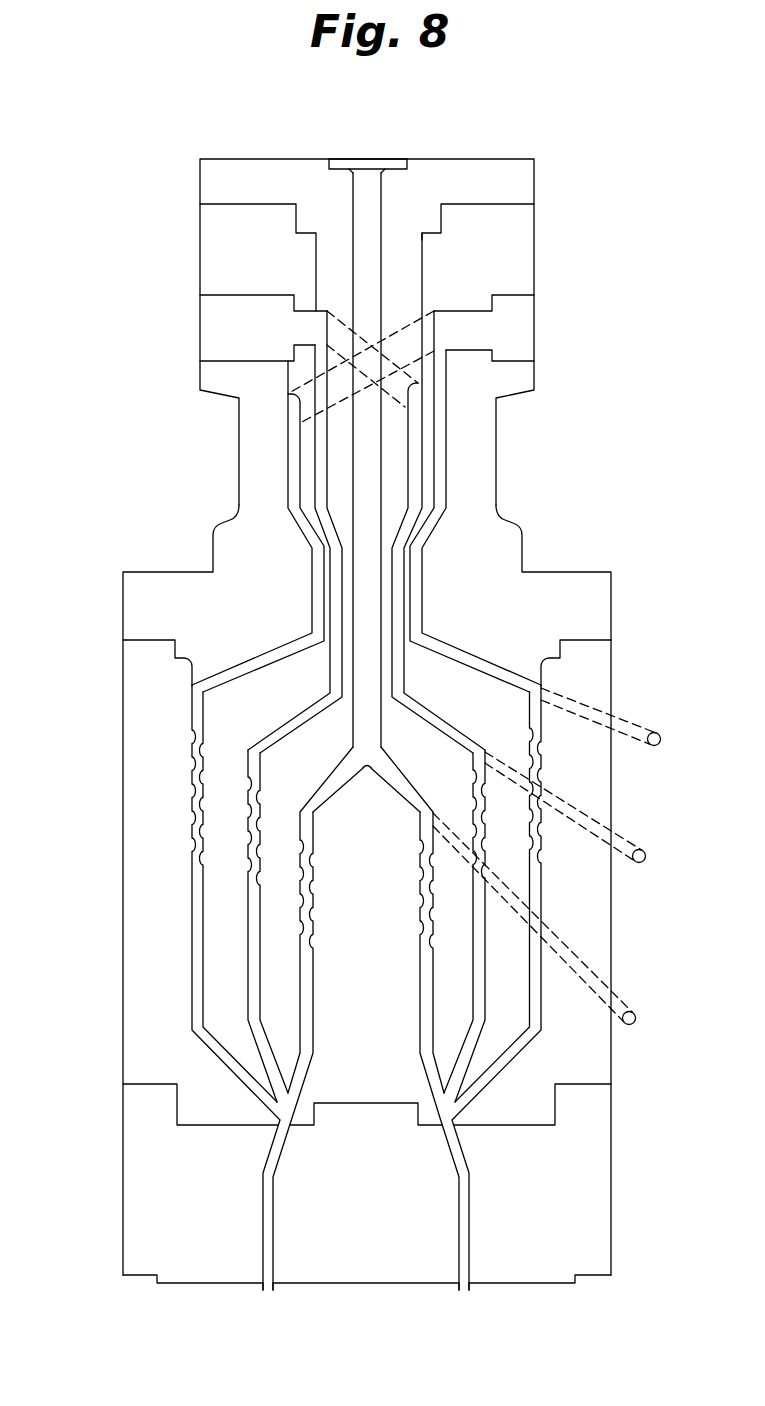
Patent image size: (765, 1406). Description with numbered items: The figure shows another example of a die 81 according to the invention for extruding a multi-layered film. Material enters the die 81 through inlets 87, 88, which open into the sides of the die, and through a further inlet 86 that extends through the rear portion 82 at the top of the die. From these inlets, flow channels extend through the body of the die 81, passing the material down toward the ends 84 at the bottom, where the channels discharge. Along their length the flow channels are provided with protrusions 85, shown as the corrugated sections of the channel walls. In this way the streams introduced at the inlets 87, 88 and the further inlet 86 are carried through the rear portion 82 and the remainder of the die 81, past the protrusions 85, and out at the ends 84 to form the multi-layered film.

The die 81 is at (253, 589).
The rear portion 82 is at (238, 191).
The ends 84 is at (264, 1288).
The protrusions 85 is at (288, 833).
The further inlet 86 is at (368, 170).
The inlet 87 is at (228, 331).
The inlet 88 is at (499, 329).